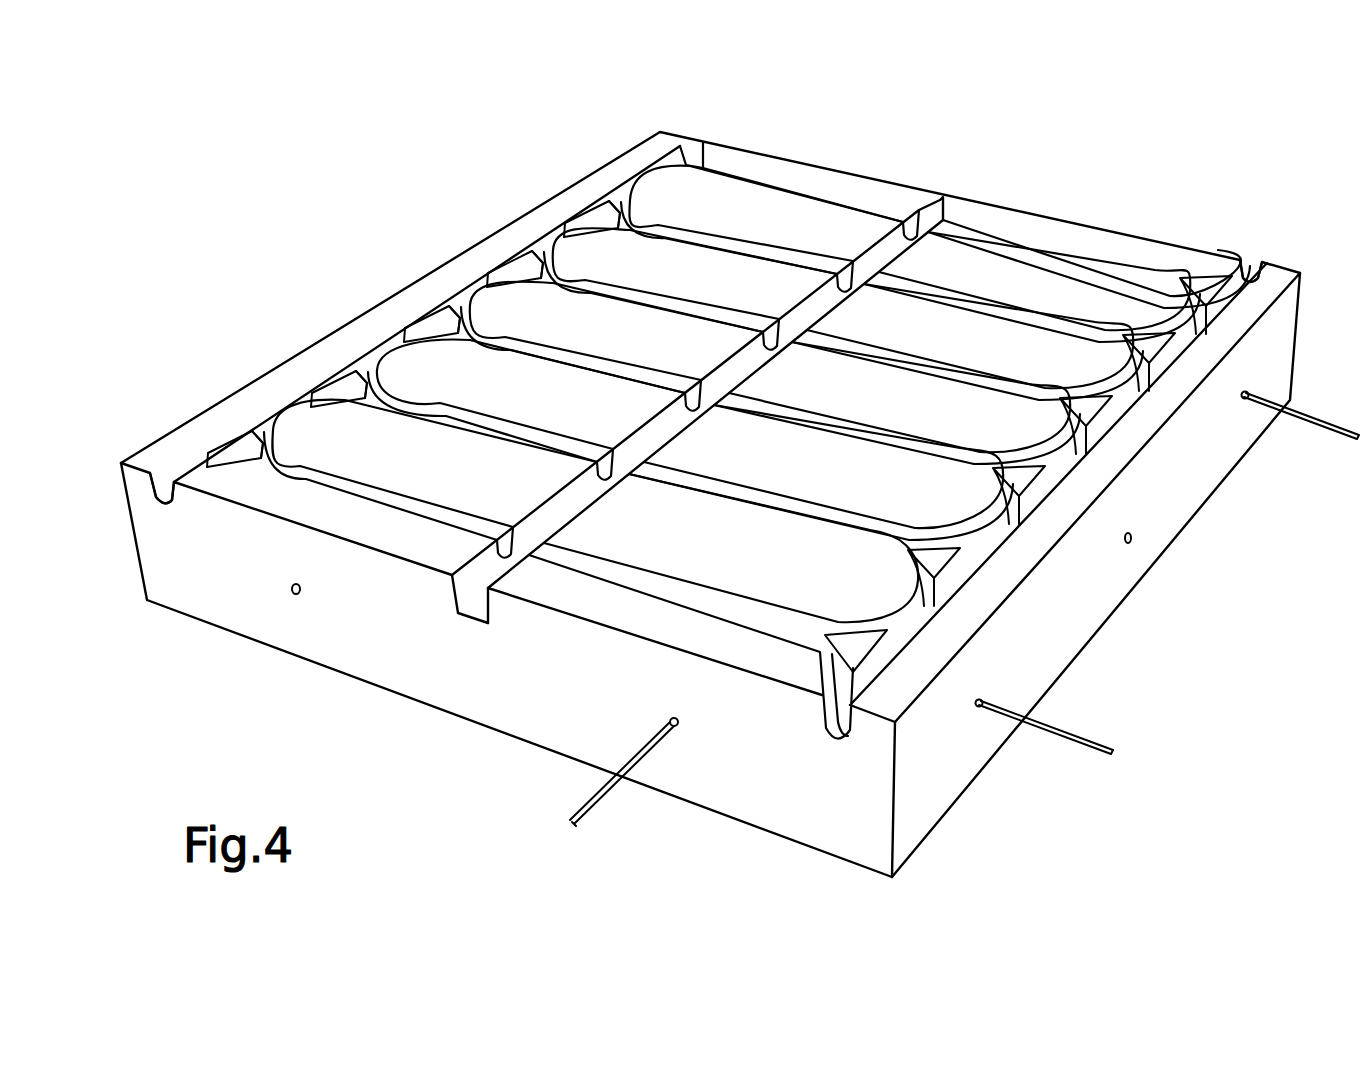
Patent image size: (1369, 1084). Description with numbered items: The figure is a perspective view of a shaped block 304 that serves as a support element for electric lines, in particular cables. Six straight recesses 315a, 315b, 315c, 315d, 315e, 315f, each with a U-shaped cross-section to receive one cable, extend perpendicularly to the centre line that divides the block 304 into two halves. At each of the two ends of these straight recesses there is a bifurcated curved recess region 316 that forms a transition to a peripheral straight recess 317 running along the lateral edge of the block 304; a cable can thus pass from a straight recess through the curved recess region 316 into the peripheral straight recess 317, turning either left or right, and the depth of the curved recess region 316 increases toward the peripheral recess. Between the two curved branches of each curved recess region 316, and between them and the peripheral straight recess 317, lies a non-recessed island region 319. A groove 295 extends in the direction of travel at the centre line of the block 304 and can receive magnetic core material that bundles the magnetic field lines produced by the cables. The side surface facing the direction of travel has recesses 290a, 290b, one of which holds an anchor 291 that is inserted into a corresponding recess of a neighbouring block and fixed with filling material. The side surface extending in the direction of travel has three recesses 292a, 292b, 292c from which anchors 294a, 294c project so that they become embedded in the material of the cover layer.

The shaped block 304 is at (1086, 650).
The groove 295 is at (477, 613).
The peripheral straight recess 317 is at (1252, 272).
The recess 315a is at (413, 505).
The recess 315b is at (470, 418).
The recess 315c is at (533, 343).
The recess 315d is at (600, 286).
The recess 315e is at (671, 228).
The recess 315f is at (838, 200).
The curved recess region 316 is at (927, 580).
The island region 319 is at (1088, 410).
The recess 290a is at (298, 596).
The recess 290b is at (678, 732).
The anchor 291 is at (622, 803).
The recess 292a is at (978, 707).
The recess 292b is at (1135, 541).
The recess 292c is at (1245, 400).
The anchor 294a is at (1084, 747).
The anchor 294c is at (1313, 413).